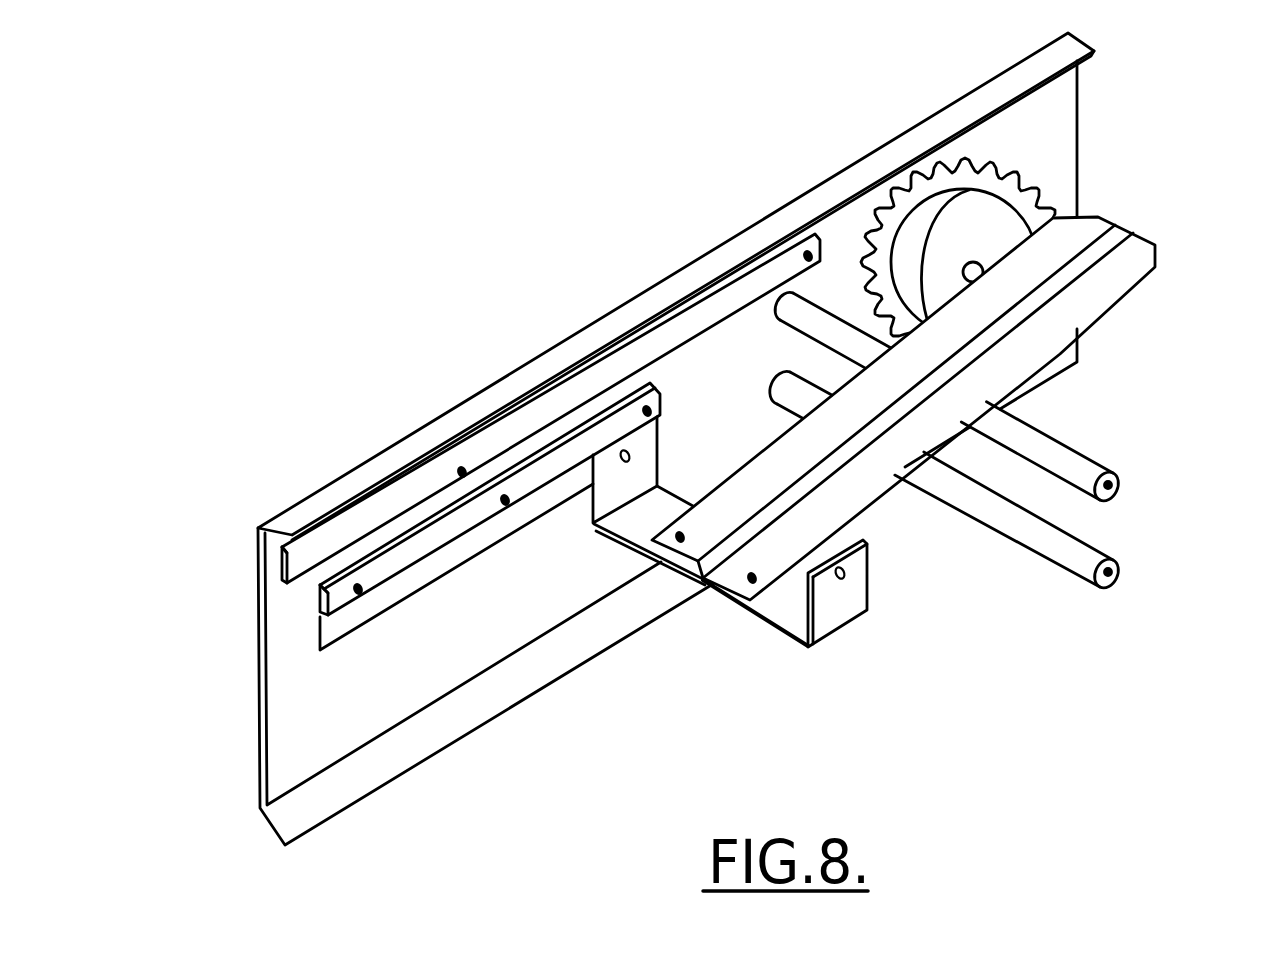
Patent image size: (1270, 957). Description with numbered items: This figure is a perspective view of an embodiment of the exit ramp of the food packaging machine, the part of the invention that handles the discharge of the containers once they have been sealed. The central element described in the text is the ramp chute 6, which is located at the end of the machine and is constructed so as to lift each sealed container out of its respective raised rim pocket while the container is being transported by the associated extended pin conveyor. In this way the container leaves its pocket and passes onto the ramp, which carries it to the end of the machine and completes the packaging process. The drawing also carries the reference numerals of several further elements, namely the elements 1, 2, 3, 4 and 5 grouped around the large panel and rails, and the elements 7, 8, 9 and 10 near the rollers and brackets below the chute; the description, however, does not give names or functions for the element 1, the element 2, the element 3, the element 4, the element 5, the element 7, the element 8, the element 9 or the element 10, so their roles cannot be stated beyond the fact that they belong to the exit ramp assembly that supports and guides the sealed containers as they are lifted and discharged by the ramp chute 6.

The side panel 1 is at (280, 733).
The lower guide rail 2 is at (322, 633).
The guide rail 3 is at (318, 590).
The upper guide rail 4 is at (308, 560).
The sprocket 5 is at (1003, 228).
The ramp chute 6 is at (1140, 275).
The upper roller 7 is at (1093, 453).
The lower roller 8 is at (1076, 552).
The mounting bracket 9 is at (843, 611).
The hanger bracket 10 is at (741, 600).